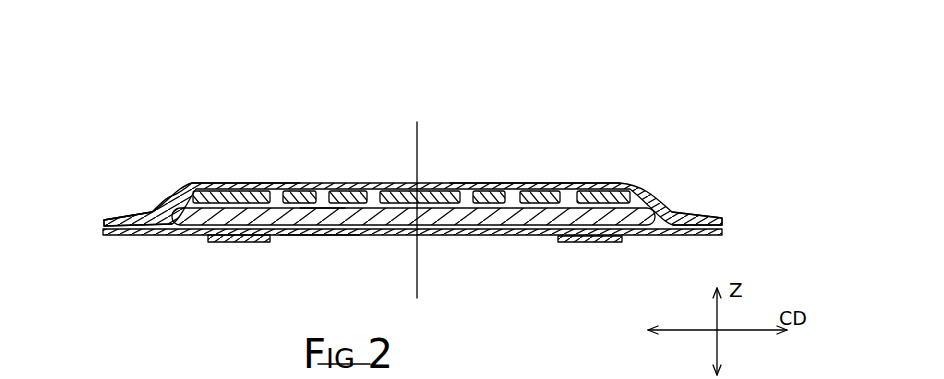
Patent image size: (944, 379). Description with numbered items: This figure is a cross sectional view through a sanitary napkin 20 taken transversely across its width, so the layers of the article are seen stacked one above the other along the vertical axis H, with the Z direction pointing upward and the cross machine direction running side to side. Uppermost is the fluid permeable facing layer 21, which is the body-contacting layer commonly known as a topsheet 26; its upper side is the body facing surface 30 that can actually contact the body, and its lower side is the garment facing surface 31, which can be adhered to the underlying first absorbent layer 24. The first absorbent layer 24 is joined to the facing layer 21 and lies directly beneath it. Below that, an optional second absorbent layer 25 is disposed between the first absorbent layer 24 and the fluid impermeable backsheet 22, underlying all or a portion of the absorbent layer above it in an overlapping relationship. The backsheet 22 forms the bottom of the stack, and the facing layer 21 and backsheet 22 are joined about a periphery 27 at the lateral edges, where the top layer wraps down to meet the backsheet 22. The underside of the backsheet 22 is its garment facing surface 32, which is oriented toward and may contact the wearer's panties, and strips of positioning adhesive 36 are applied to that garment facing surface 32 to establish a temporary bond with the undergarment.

The sanitary napkin 20 is at (415, 205).
The fluid permeable facing layer 21 is at (263, 182).
The fluid impermeable backsheet 22 is at (207, 237).
The first absorbent layer 24 is at (313, 183).
The second absorbent layer 25 is at (323, 207).
The topsheet 26 is at (483, 182).
The periphery 27 is at (104, 223).
The body facing surface 30 is at (228, 182).
The garment facing surface 31 is at (202, 182).
The garment facing surface 32 is at (323, 237).
The positioning adhesive 36 is at (247, 243).
The vertical axis H is at (418, 128).